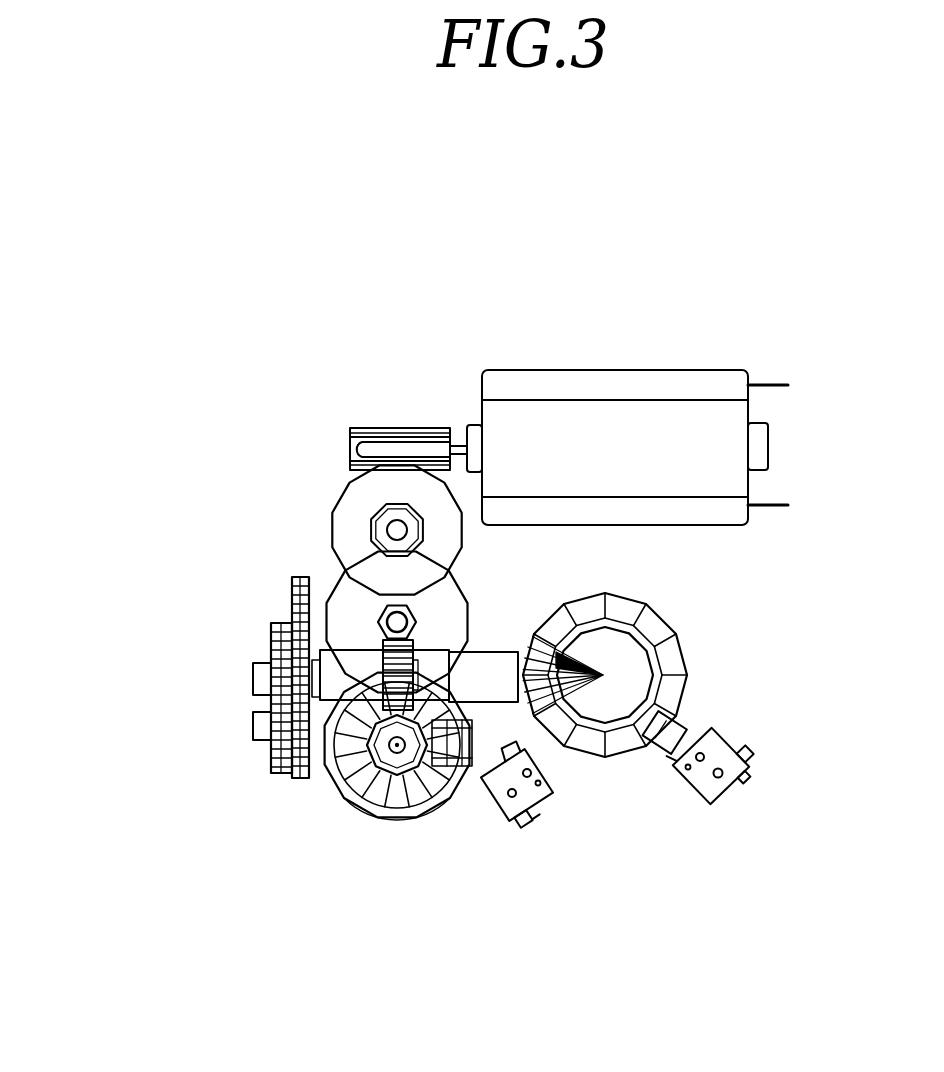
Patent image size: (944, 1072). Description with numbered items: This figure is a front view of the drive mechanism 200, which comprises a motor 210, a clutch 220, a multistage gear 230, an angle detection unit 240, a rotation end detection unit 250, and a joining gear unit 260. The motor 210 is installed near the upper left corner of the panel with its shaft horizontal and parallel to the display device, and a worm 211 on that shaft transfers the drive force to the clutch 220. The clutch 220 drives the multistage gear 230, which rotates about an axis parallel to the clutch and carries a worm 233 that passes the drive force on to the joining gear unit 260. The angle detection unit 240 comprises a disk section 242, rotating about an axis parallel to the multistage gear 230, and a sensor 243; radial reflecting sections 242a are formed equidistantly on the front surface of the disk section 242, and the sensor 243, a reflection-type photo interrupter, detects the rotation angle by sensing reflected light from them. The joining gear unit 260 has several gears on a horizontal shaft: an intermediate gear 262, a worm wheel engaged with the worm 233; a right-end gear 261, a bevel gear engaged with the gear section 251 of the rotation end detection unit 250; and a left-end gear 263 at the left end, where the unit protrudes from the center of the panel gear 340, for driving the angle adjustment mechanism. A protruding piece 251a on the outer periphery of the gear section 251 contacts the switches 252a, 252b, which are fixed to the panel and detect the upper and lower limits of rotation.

The drive mechanism 200 is at (813, 149).
The motor 210 is at (640, 430).
The worm 211 is at (407, 433).
The clutch 220 is at (324, 463).
The multistage gear 230 is at (318, 549).
The worm 233 is at (393, 636).
The angle detection unit 240 is at (405, 925).
The disk section 242 is at (423, 813).
The reflecting sections 242a is at (367, 813).
The sensor 243 is at (455, 785).
The rotation end detection unit 250 is at (620, 908).
The gear section 251 is at (652, 623).
The protruding piece 251a is at (667, 733).
The switch 252a is at (528, 812).
The switch 252b is at (687, 805).
The joining gear unit 260 is at (522, 604).
The right-end gear 261 is at (572, 604).
The intermediate gear 262 is at (417, 633).
The left-end gear 263 is at (268, 642).
The panel gear 340 is at (293, 593).